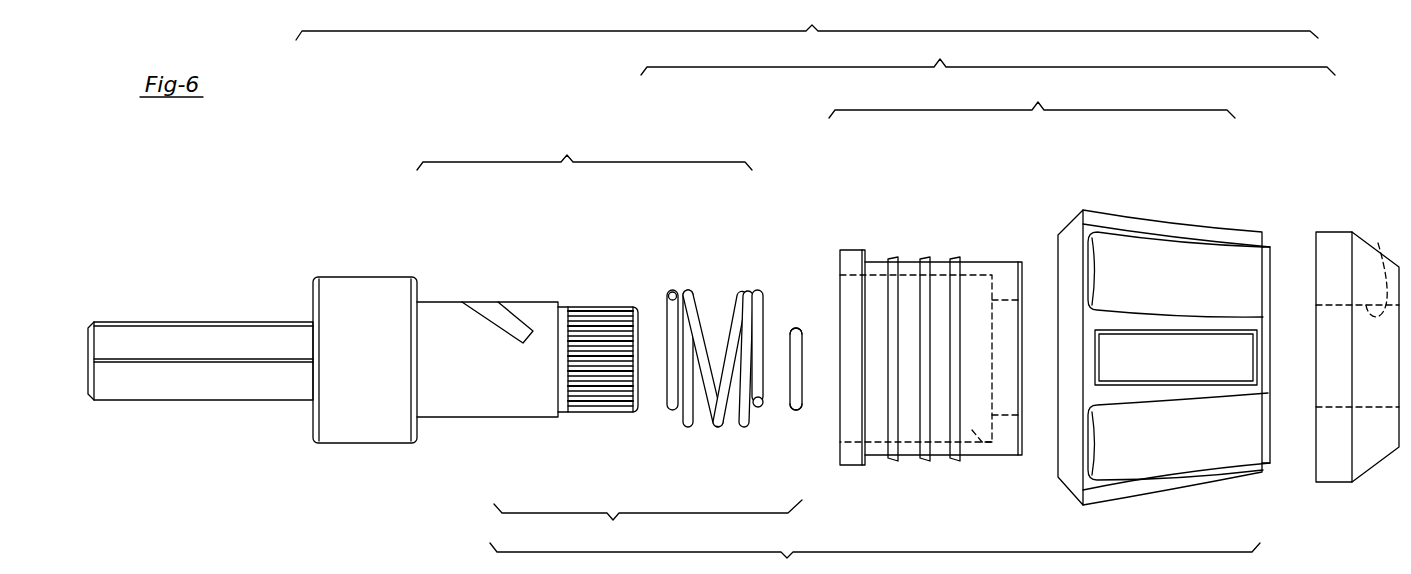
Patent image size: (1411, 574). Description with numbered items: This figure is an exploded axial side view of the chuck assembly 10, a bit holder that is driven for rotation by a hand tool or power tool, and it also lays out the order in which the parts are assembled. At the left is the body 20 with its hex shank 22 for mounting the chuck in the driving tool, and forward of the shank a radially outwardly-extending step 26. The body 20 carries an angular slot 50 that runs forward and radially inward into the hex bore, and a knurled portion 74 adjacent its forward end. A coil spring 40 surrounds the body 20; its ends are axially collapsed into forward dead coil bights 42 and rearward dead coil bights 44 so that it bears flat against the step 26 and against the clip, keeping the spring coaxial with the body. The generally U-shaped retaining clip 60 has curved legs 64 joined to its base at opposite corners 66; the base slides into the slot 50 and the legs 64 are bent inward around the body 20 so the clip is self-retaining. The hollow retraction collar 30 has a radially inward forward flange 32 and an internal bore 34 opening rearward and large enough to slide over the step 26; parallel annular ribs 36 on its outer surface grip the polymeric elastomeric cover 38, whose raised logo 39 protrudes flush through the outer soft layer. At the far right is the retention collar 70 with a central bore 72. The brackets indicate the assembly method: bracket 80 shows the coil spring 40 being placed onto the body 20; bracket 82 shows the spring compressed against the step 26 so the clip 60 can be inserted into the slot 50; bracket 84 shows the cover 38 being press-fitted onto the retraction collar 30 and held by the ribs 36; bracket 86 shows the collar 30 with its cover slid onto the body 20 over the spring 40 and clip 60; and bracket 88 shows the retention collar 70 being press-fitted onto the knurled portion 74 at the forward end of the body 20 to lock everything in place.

The chuck assembly 10 is at (792, 186).
The body 20 is at (371, 289).
The hex shank 22 is at (222, 352).
The step 26 is at (418, 288).
The retraction collar 30 is at (947, 341).
The forward flange 32 is at (990, 397).
The internal bore 34 is at (972, 432).
The annular ribs 36 is at (892, 262).
The polymeric cover 38 is at (1153, 311).
The logo 39 is at (1140, 350).
The coil spring 40 is at (728, 296).
The forward dead coil bights 42 is at (747, 290).
The rearward dead coil bights 44 is at (670, 290).
The angular slot 50 is at (479, 312).
The retaining clip 60 is at (788, 388).
The curved legs 64 is at (798, 363).
The corners 66 is at (795, 328).
The retention collar 70 is at (1350, 311).
The central bore 72 is at (1373, 253).
The knurled portion 74 is at (600, 327).
The bracket 80 is at (584, 150).
The bracket 82 is at (648, 523).
The bracket 84 is at (1032, 98).
The bracket 86 is at (875, 558).
The bracket 88 is at (988, 53).